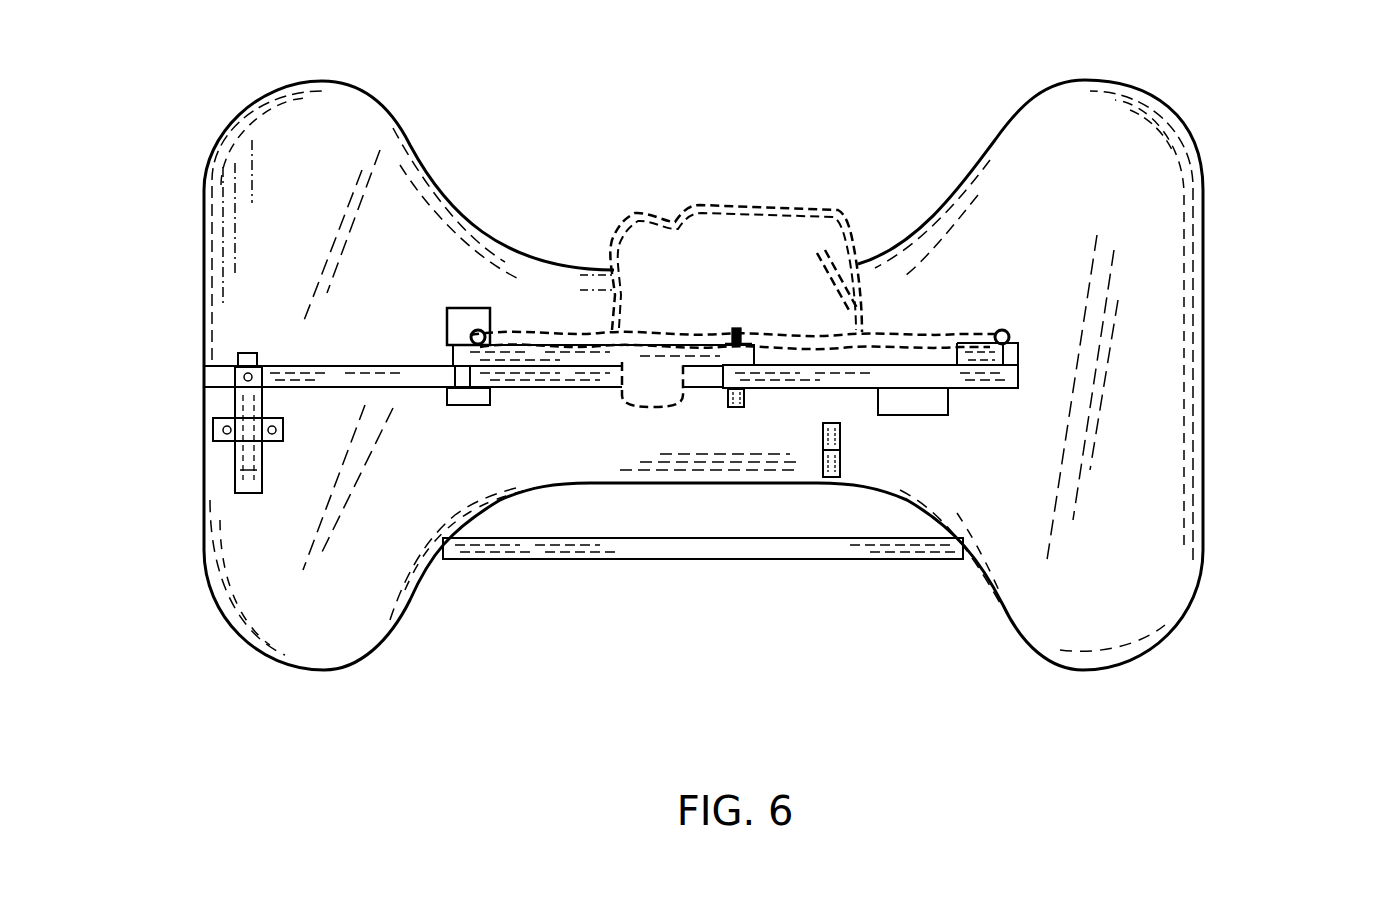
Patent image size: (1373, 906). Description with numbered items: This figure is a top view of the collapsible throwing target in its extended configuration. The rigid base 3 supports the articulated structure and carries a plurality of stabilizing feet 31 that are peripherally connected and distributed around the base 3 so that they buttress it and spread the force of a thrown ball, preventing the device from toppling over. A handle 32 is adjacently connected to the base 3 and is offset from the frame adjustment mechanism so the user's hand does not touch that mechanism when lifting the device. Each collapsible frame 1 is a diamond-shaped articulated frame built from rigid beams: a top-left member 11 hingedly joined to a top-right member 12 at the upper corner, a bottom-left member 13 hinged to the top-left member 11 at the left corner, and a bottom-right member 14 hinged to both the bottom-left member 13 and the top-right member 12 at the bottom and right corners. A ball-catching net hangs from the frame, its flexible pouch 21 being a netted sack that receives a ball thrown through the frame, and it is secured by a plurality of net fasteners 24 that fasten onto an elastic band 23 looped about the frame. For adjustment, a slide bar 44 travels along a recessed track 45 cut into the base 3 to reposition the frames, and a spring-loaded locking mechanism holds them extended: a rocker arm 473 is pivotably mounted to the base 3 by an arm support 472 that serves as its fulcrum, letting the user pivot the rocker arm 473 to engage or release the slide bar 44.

The collapsible frame 1 is at (695, 418).
The base 3 is at (1262, 388).
The top-left member 11 is at (453, 356).
The top-right member 12 is at (1023, 340).
The bottom-left member 13 is at (597, 382).
The bottom-right member 14 is at (948, 380).
The pouch 21 is at (712, 223).
The elastic band 23 is at (492, 337).
The net fastener 24 is at (476, 328).
The stabilizing foot 31 is at (315, 90).
The handle 32 is at (730, 548).
The slide bar 44 is at (413, 375).
The recessed track 45 is at (223, 377).
The arm support 472 is at (213, 430).
The rocker arm 473 is at (257, 462).